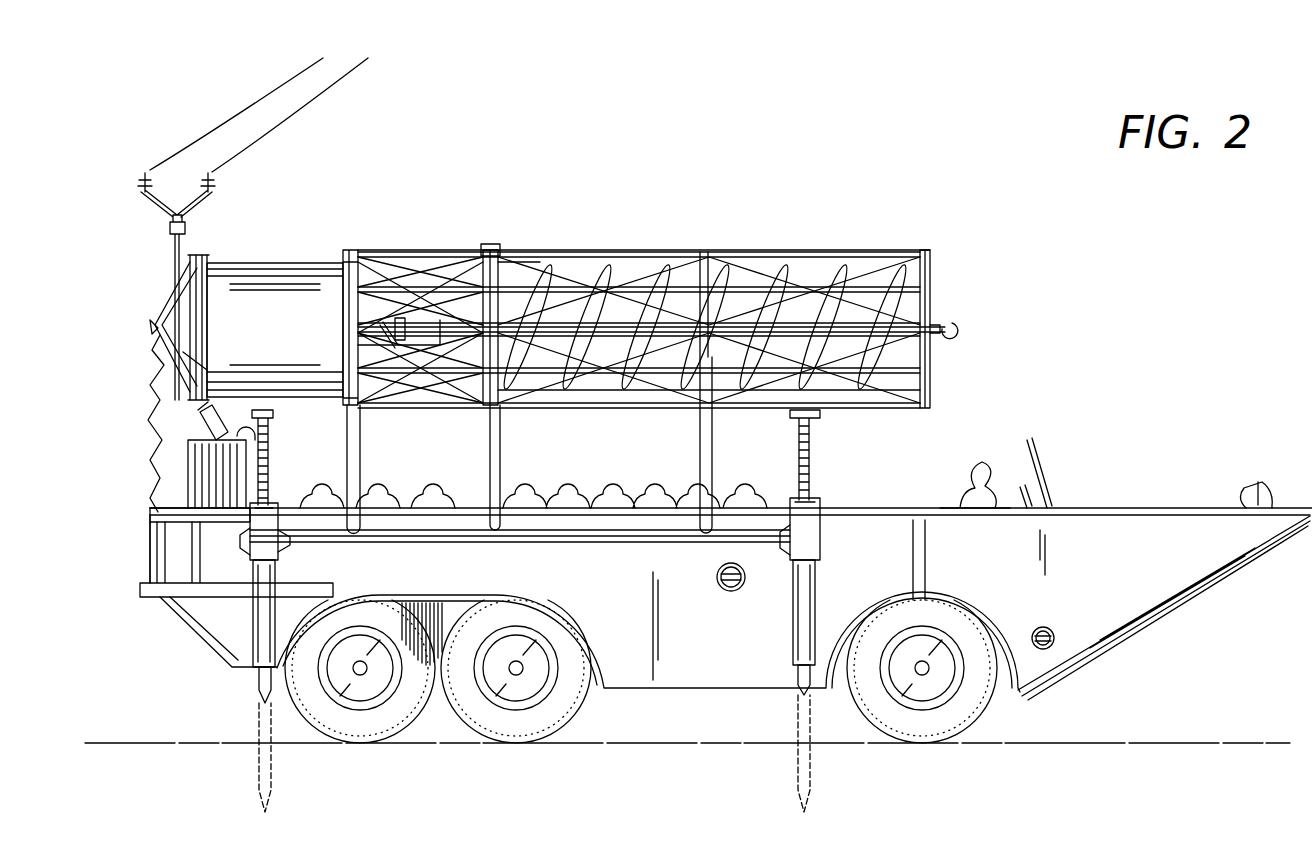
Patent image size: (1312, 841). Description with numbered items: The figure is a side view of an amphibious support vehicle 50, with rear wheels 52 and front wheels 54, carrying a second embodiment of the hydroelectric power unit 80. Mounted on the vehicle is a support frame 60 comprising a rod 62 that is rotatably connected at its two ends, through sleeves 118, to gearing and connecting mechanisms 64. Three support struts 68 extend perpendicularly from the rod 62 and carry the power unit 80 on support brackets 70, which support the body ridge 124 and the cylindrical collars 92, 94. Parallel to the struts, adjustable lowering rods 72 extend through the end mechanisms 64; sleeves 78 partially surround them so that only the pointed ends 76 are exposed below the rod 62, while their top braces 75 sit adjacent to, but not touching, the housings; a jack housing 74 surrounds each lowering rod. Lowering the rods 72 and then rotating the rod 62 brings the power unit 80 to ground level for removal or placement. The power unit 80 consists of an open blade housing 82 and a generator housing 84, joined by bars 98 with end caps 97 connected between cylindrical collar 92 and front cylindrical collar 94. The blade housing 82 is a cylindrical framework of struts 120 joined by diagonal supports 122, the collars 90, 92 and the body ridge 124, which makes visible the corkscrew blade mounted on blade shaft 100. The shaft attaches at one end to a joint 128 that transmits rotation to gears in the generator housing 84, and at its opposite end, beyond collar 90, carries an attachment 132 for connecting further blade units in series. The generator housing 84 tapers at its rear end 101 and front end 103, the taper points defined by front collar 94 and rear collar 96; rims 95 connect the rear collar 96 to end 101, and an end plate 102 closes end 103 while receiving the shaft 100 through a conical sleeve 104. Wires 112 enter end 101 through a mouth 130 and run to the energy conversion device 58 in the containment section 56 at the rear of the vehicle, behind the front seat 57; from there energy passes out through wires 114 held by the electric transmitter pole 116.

The support vehicle 50 is at (1160, 456).
The rear wheels 52 is at (327, 718).
The front wheels 54 is at (955, 742).
The containment section 56 is at (196, 516).
The front seat 57 is at (955, 498).
The energy conversion device 58 is at (217, 497).
The support frame 60 is at (620, 550).
The rod 62 is at (445, 535).
The gearing and connecting mechanism 64 is at (263, 545).
The support struts 68 is at (358, 465).
The support bracket 70 is at (350, 395).
The adjustable lowering rods 72 is at (264, 468).
The jack housing 74 is at (808, 468).
The top braces 75 is at (790, 417).
The pointed ends 76 is at (262, 683).
The sleeves 78 is at (262, 628).
The power unit 80 is at (754, 194).
The blade housing 82 is at (868, 252).
The generator housing 84 is at (300, 300).
The cylindrical collar 90 is at (928, 250).
The cylindrical collar 92 is at (488, 250).
The front cylindrical collar 94 is at (350, 252).
The rims 95 is at (186, 362).
The rear cylindrical collar 96 is at (203, 262).
The end caps 97 is at (513, 268).
The bars 98 is at (415, 252).
The blade shaft 100 is at (610, 408).
The rear end 101 is at (170, 302).
The end plate 102 is at (398, 340).
The front end 103 is at (392, 330).
The conical sleeve 104 is at (410, 400).
The wires 112 is at (152, 456).
The wires 114 is at (281, 130).
The electric transmitter pole 116 is at (165, 212).
The sleeves 118 is at (282, 540).
The struts 120 is at (640, 252).
The diagonal supports 122 is at (442, 258).
The body ridge 124 is at (703, 252).
The joint 128 is at (473, 255).
The mouth 130 is at (150, 323).
The attachment 132 is at (950, 322).